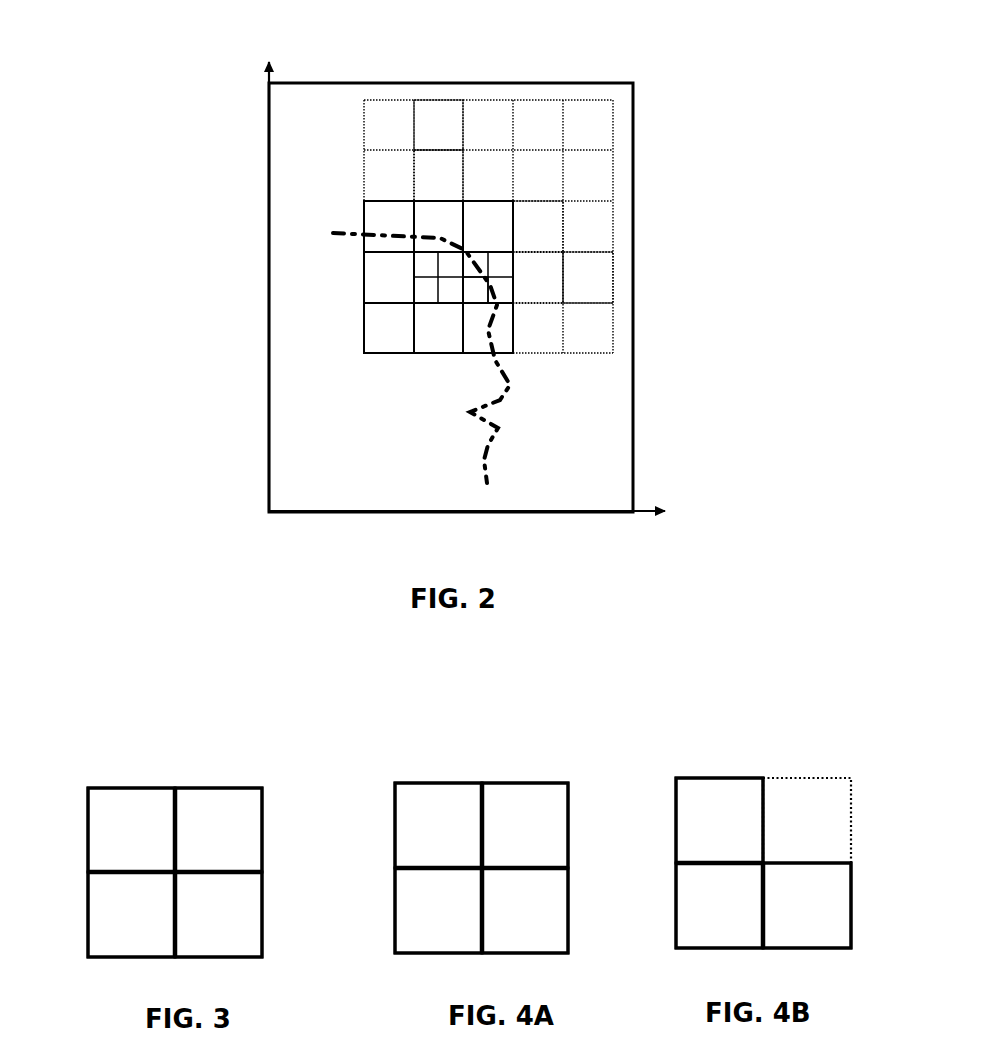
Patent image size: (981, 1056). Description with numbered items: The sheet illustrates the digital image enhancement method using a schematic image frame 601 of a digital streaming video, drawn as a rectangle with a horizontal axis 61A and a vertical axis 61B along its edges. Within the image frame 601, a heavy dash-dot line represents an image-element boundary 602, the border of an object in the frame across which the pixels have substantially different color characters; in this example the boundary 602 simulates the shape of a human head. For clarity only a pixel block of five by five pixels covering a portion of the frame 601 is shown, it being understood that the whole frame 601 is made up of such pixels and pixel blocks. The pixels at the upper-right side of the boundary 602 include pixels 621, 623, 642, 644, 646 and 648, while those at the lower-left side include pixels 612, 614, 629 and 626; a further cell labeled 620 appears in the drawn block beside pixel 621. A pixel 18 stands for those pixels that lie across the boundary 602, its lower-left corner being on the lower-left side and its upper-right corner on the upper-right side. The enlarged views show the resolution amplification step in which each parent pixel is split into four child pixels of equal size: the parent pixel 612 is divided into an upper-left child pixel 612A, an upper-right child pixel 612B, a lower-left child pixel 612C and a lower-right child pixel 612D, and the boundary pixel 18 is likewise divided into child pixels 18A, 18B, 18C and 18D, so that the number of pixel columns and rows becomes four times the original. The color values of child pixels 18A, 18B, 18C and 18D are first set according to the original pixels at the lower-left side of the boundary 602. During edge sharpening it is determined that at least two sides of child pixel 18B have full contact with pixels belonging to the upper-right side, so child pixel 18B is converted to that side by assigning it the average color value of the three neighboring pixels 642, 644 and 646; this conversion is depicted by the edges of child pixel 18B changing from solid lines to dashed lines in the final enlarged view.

In FIG. 2, the image frame 601 is at (636, 378).
In FIG. 2, the image-element boundary 602 is at (528, 459).
In FIG. 2, the horizontal axis 61A is at (647, 513).
In FIG. 2, the vertical axis 61B is at (276, 60).
In FIG. 2, the pixel 623 is at (440, 127).
In FIG. 2, the pixel 621 is at (430, 165).
In FIG. 2, the image block 620 is at (433, 218).
In FIG. 2, the pixel 642 is at (488, 226).
In FIG. 2, the pixel 614 is at (385, 280).
In FIG. 2, the parent pixel 612 is at (414, 305).
In FIG. 3, the parent pixel 612 is at (68, 764).
In FIG. 2, the pixel 629 is at (390, 338).
In FIG. 2, the pixel 626 is at (435, 333).
In FIG. 2, the element-boundary pixel 18 is at (480, 288).
In FIG. 4A, the element-boundary pixel 18 is at (357, 764).
In FIG. 4B, the element-boundary pixel 18 is at (660, 760).
In FIG. 2, the pixel 646 is at (538, 283).
In FIG. 2, the pixel 644 is at (535, 226).
In FIG. 2, the pixel 648 is at (598, 278).
In FIG. 3, the upper-left child pixel 612A is at (125, 812).
In FIG. 3, the upper-right child pixel 612B is at (222, 810).
In FIG. 3, the lower-left child pixel 612C is at (108, 937).
In FIG. 3, the lower-right child pixel 612D is at (245, 927).
In FIG. 4A, the upper-left child pixel 18A is at (436, 808).
In FIG. 4B, the upper-left child pixel 18A is at (723, 808).
In FIG. 4A, the upper-right child pixel 18B is at (525, 807).
In FIG. 4B, the upper-right child pixel 18B is at (810, 813).
In FIG. 4A, the lower-left child pixel 18C is at (422, 933).
In FIG. 4B, the lower-left child pixel 18C is at (700, 925).
In FIG. 4A, the lower-right child pixel 18D is at (550, 921).
In FIG. 4B, the lower-right child pixel 18D is at (803, 920).